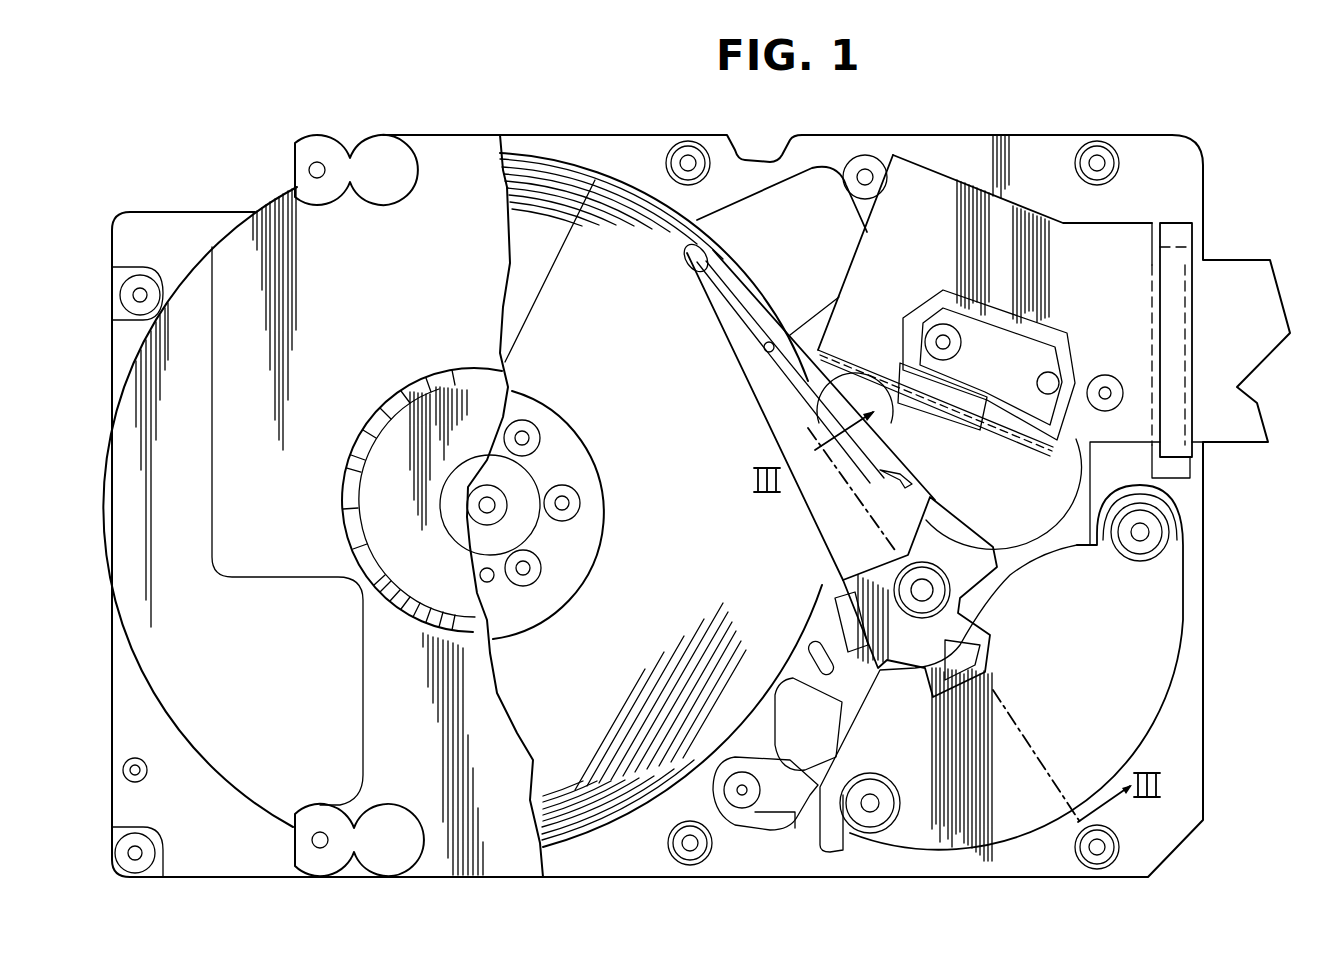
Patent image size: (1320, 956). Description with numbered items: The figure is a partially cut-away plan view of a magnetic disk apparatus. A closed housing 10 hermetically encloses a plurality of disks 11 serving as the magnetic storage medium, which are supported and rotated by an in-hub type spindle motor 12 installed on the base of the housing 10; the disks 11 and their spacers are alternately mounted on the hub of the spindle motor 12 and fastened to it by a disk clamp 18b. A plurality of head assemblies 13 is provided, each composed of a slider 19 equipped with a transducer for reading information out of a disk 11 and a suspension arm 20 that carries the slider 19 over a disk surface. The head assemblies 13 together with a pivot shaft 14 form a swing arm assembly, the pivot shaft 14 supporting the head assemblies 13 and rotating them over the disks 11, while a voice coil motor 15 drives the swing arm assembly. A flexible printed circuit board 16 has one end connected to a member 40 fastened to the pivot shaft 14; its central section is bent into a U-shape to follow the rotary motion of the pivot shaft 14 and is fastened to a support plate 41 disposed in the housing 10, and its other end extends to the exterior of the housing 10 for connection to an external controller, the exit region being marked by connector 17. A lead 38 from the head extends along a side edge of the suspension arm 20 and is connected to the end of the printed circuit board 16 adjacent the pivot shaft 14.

The housing 10 is at (619, 155).
The disk 11 is at (548, 165).
The spindle motor 12 is at (497, 533).
The head assembly 13 is at (752, 404).
The pivot shaft 14 is at (958, 573).
The voice coil motor 15 is at (950, 850).
The printed circuit board 16 is at (1072, 530).
The connector 17 is at (1107, 243).
The disk clamp 18b is at (513, 598).
The slider 19 is at (686, 254).
The suspension arm 20 is at (833, 500).
The lead 38 is at (898, 487).
The member 40 is at (968, 553).
The support plate 41 is at (858, 350).